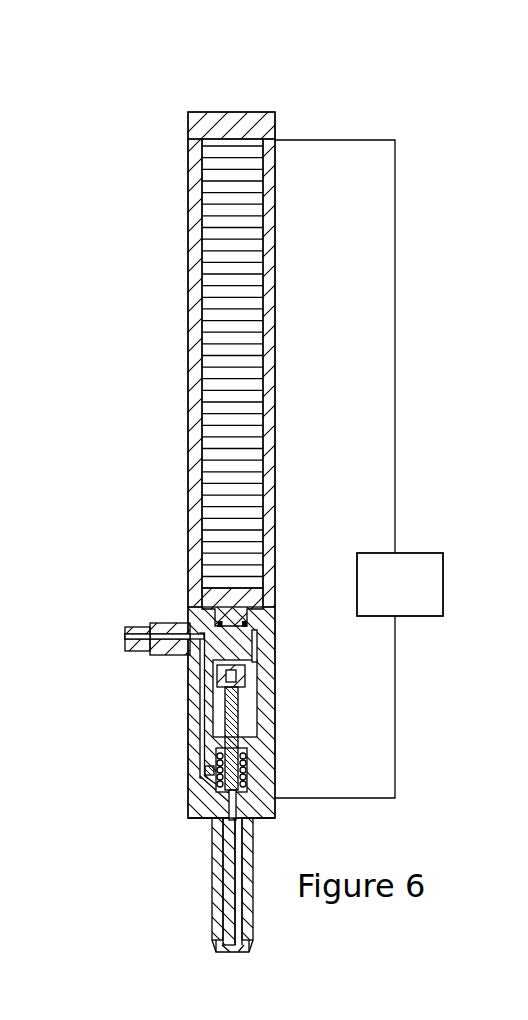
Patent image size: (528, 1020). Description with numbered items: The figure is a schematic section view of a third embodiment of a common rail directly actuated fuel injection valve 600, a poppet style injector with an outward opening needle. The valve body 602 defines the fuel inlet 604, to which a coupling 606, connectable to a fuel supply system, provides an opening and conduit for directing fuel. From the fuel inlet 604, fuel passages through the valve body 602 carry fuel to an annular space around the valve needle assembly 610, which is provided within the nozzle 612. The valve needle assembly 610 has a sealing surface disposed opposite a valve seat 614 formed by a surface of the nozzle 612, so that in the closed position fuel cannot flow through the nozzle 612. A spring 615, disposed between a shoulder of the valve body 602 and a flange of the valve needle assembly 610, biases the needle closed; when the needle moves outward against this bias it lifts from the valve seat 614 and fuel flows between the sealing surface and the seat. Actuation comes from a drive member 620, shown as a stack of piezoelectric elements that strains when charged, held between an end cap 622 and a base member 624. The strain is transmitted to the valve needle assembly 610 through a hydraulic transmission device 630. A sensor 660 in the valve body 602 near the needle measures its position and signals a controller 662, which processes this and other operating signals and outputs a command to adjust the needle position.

The fuel injection valve 600 is at (160, 102).
The valve body 602 is at (260, 730).
The fuel inlet 604 is at (186, 626).
The coupling 606 is at (134, 627).
The valve needle assembly 610 is at (224, 873).
The nozzle 612 is at (214, 907).
The valve seat 614 is at (215, 937).
The spring 615 is at (250, 764).
The drive member 620 is at (232, 302).
The end cap 622 is at (245, 126).
The base member 624 is at (225, 602).
The hydraulic transmission device 630 is at (165, 684).
The sensor 660 is at (242, 796).
The controller 662 is at (417, 595).